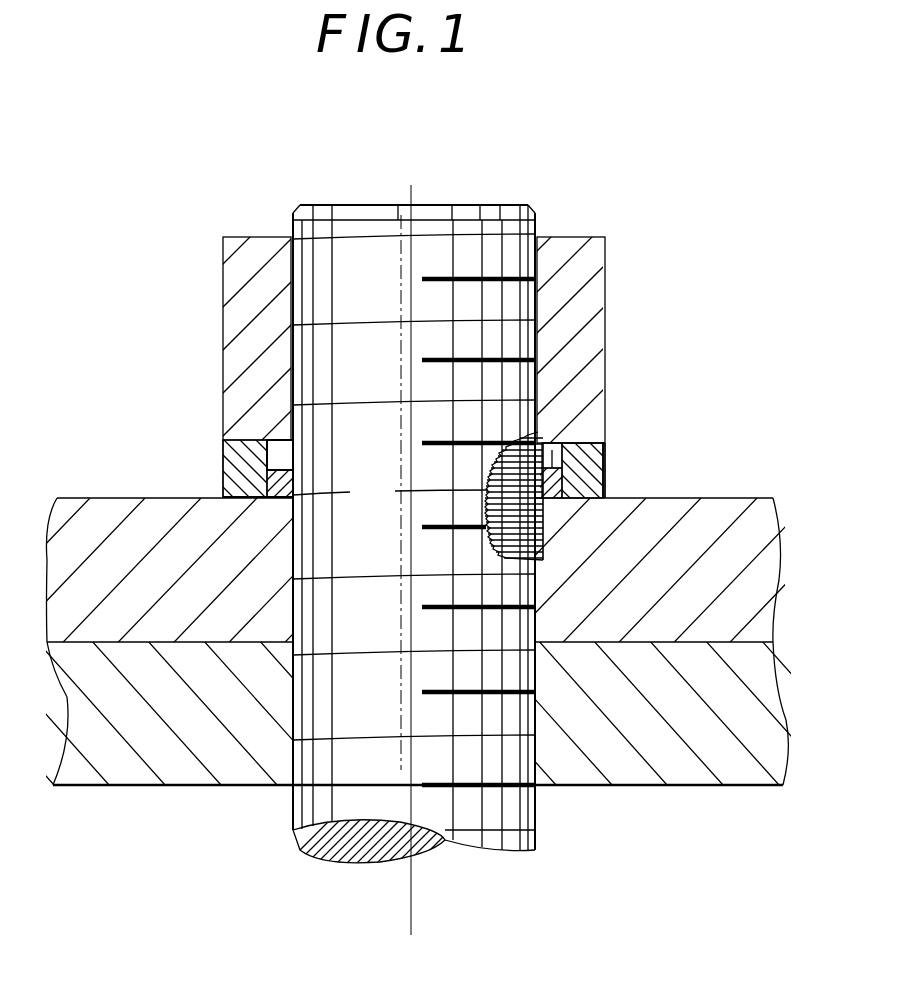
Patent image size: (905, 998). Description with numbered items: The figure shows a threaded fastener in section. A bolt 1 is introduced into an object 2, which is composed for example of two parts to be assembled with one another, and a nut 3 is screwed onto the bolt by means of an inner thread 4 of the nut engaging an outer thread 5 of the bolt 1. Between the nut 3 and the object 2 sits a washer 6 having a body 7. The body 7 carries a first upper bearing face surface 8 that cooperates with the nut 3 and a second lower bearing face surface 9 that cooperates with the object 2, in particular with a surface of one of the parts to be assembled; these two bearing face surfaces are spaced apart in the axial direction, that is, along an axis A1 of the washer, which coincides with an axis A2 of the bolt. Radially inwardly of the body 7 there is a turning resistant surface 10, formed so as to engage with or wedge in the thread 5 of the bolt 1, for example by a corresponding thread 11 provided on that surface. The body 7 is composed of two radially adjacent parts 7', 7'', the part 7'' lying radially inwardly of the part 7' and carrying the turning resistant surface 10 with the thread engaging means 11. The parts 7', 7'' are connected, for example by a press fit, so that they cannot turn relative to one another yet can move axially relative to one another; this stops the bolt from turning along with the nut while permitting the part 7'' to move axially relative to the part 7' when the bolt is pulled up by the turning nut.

The bolt 1 is at (270, 585).
The object 2 is at (810, 740).
The nut 3 is at (228, 395).
The inner thread 4 is at (293, 342).
The outer thread 5 is at (541, 437).
The washer 6 is at (733, 427).
The body 7 is at (650, 466).
The part 7' is at (615, 478).
The part 7'' is at (592, 448).
The first upper bearing face surface 8 is at (250, 440).
The second lower bearing face surface 9 is at (256, 495).
The turning resistant surface 10 is at (292, 487).
The thread 11 is at (553, 527).
The axis of the washer A1 is at (413, 200).
The axis of the bolt A2 is at (401, 476).